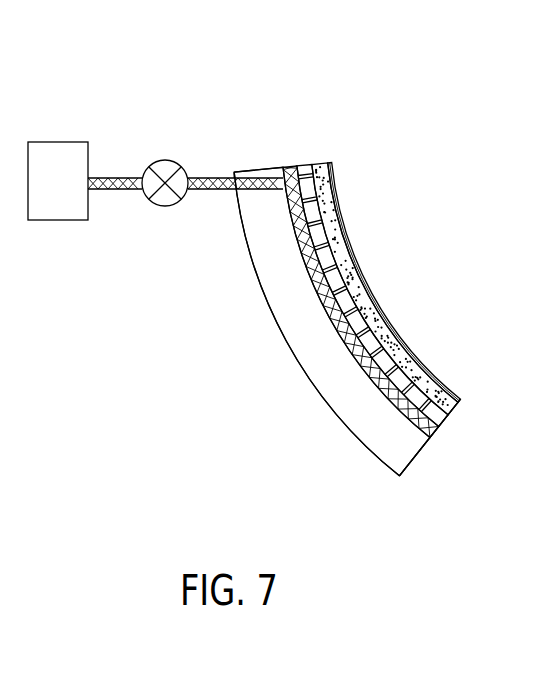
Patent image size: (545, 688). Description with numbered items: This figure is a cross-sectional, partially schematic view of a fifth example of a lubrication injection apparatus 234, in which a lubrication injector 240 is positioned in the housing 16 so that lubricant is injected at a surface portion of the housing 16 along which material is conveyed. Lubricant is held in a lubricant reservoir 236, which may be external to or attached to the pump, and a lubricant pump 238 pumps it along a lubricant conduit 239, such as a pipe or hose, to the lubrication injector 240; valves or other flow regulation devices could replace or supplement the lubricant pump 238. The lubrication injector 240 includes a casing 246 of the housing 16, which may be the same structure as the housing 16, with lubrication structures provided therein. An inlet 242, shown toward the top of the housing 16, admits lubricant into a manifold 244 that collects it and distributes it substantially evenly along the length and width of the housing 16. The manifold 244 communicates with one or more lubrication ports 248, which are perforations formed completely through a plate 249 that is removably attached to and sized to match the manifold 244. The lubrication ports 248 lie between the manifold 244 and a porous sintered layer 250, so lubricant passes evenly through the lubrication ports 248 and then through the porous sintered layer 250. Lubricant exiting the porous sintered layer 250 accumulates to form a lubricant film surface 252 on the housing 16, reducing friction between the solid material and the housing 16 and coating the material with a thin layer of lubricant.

The housing 16 is at (348, 466).
The lubrication injection apparatus 234 is at (145, 103).
The lubricant reservoir 236 is at (55, 221).
The lubricant pump 238 is at (165, 207).
The lubricant conduit 239 is at (205, 190).
The lubrication injector 240 is at (228, 334).
The inlet 242 is at (233, 174).
The manifold 244 is at (437, 438).
The casing 246 is at (340, 418).
The lubrication ports 248 is at (405, 380).
The plate 249 is at (445, 393).
The porous sintered layer 250 is at (455, 408).
The lubricant film surface 252 is at (383, 310).